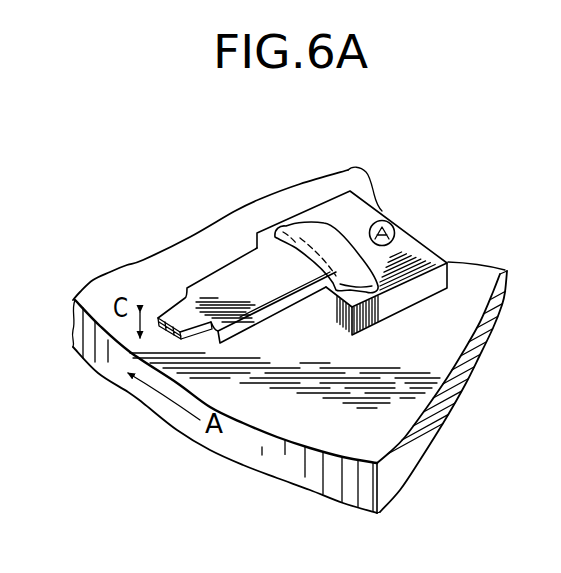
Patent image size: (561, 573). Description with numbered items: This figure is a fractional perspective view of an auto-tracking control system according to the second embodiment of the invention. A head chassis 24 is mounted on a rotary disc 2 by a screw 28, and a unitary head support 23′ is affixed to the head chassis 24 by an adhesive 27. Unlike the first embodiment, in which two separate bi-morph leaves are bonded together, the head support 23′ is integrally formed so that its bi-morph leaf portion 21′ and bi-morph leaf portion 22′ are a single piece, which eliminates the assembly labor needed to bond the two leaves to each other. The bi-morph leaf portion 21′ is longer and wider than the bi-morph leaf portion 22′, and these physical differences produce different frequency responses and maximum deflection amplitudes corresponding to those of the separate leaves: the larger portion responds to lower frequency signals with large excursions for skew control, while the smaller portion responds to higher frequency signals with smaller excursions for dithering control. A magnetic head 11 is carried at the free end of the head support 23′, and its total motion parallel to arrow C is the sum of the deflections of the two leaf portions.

The rotary disc 2 is at (108, 370).
The magnetic head 11 is at (133, 352).
The unitary head support 23′ is at (183, 273).
The bi-morph leaf portion 21′ is at (246, 278).
The bi-morph leaf portion 22′ is at (166, 320).
The head chassis 24 is at (414, 252).
The adhesive 27 is at (298, 230).
The screw 28 is at (387, 222).